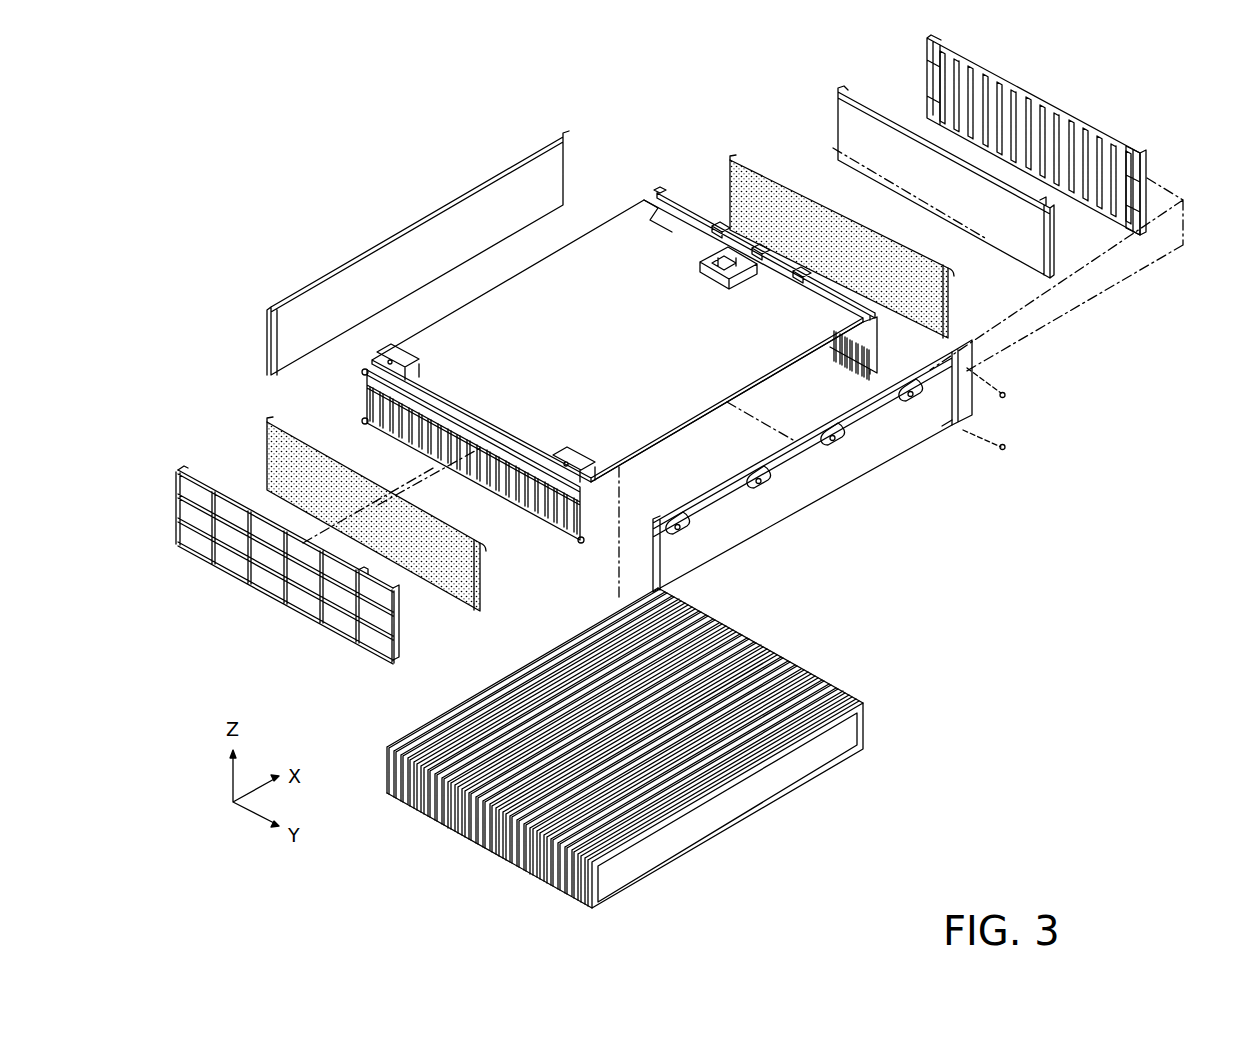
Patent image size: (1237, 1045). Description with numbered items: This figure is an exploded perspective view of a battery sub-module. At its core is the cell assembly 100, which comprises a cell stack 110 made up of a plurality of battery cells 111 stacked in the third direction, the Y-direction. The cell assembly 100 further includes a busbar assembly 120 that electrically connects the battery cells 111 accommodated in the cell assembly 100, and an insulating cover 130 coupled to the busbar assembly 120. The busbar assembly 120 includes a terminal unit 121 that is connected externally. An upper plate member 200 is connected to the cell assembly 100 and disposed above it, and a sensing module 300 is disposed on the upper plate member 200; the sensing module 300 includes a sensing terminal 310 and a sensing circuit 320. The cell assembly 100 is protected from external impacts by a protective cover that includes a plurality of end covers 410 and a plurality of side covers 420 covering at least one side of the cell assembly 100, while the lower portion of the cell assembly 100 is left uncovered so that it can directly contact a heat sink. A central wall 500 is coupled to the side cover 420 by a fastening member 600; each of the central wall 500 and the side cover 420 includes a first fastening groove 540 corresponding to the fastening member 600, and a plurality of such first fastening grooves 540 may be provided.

The cell assembly 100 is at (1085, 808).
The cell stack 110 is at (428, 826).
The battery cell 111 is at (734, 806).
The busbar assembly 120 is at (668, 190).
The terminal unit 121 is at (585, 443).
The insulating cover 130 is at (731, 158).
The upper plate member 200 is at (457, 327).
The sensing module 300 is at (603, 83).
The sensing terminal 310 is at (665, 245).
The sensing circuit 320 is at (645, 262).
The end cover 410 is at (838, 128).
The side cover 420 is at (313, 275).
The central wall 500 is at (927, 70).
The first fastening groove 540 is at (1148, 180).
The fastening member 600 is at (1003, 447).